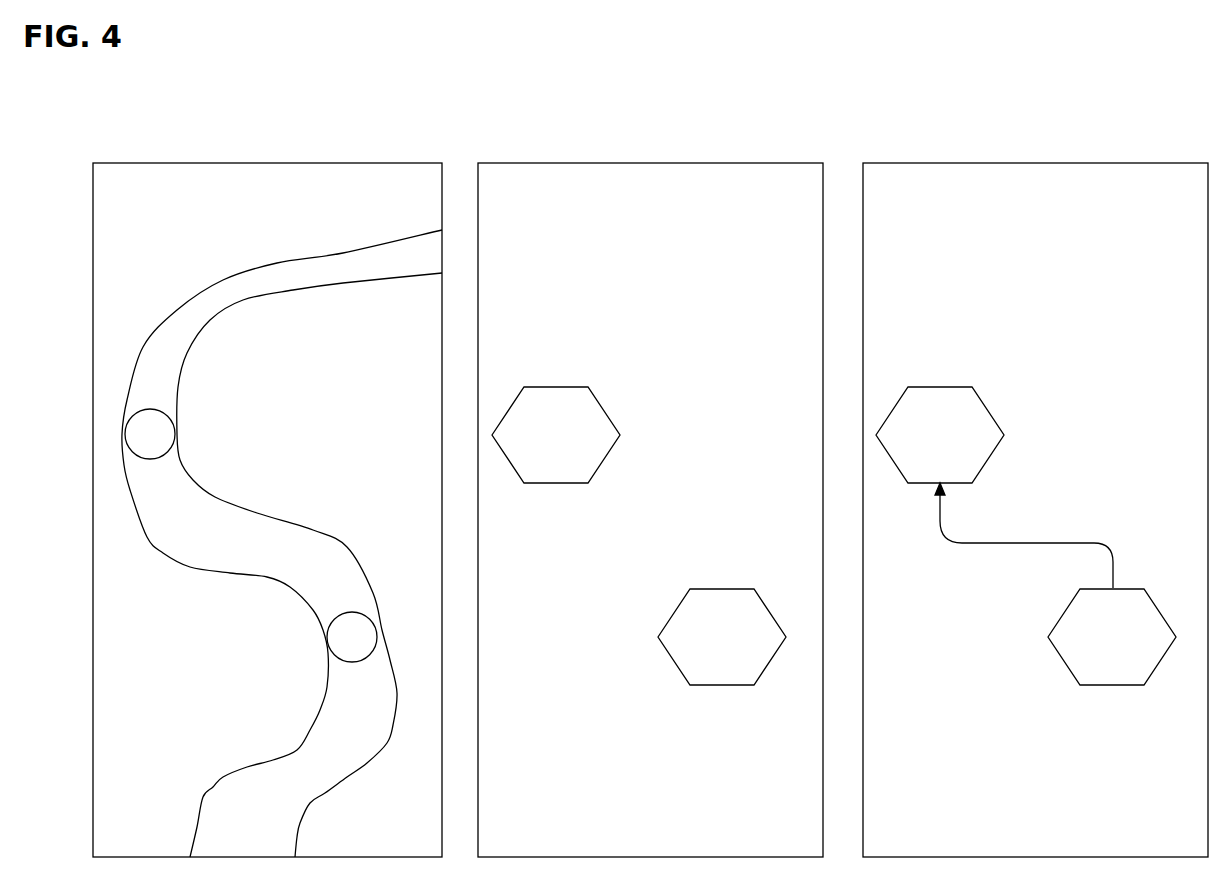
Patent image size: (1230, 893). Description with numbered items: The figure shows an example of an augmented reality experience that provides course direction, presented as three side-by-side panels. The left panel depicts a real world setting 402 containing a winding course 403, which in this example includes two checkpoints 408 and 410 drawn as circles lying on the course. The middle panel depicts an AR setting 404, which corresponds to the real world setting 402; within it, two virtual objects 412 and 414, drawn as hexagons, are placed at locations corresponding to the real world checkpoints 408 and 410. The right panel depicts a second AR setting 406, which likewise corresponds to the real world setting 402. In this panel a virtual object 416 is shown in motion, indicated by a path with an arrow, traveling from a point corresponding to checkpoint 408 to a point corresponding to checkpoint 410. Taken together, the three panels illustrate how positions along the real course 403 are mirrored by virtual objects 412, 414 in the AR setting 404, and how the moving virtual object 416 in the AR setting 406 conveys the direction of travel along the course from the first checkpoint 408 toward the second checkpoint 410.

The real world setting 402 is at (128, 213).
The course 403 is at (307, 290).
The AR setting 404 is at (514, 213).
The AR setting 406 is at (899, 213).
The checkpoint 408 is at (337, 646).
The checkpoint 410 is at (135, 443).
The virtual object 412 is at (707, 646).
The virtual object 414 is at (541, 444).
The virtual object 416 is at (925, 444).